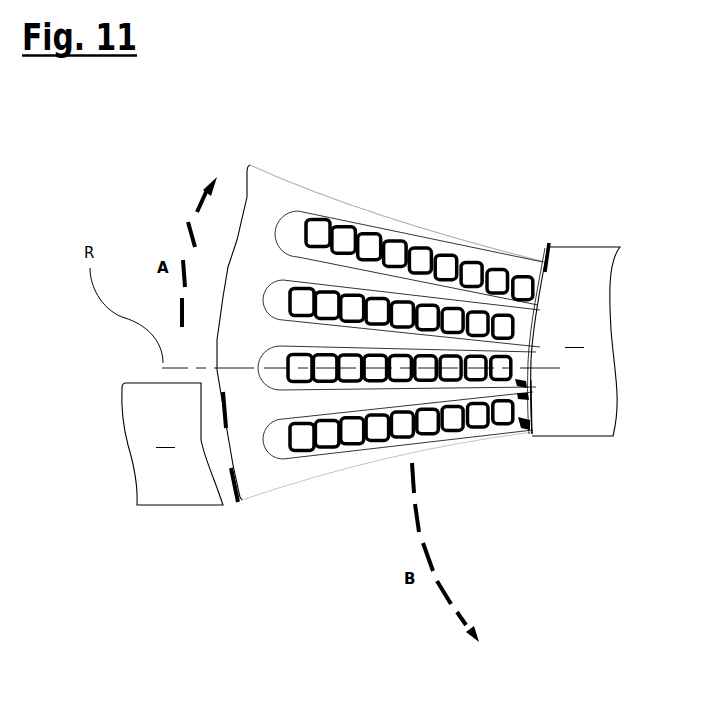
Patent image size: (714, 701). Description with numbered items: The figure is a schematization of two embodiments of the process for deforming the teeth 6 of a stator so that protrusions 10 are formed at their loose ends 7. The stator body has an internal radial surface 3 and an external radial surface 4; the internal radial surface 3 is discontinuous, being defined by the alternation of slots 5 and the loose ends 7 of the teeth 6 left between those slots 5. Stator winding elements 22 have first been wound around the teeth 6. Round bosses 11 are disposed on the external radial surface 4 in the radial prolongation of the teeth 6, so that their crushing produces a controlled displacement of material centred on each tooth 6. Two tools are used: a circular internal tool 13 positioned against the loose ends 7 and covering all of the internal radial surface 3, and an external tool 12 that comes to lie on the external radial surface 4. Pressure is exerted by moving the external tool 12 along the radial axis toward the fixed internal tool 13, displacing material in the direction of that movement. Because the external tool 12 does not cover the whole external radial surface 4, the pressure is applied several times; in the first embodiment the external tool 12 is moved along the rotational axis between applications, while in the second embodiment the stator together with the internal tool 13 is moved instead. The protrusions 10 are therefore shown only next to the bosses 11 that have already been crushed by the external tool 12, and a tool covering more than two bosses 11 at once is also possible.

The internal radial surface 3 is at (548, 395).
The external radial surface 4 is at (216, 267).
The slots 5 is at (541, 260).
The teeth 6 is at (488, 253).
The loose ends 7 is at (545, 266).
The protrusions 10 is at (523, 430).
The bosses 11 is at (235, 252).
The external tool 12 is at (172, 444).
The internal tool 13 is at (576, 341).
The stator winding elements 22 is at (425, 253).